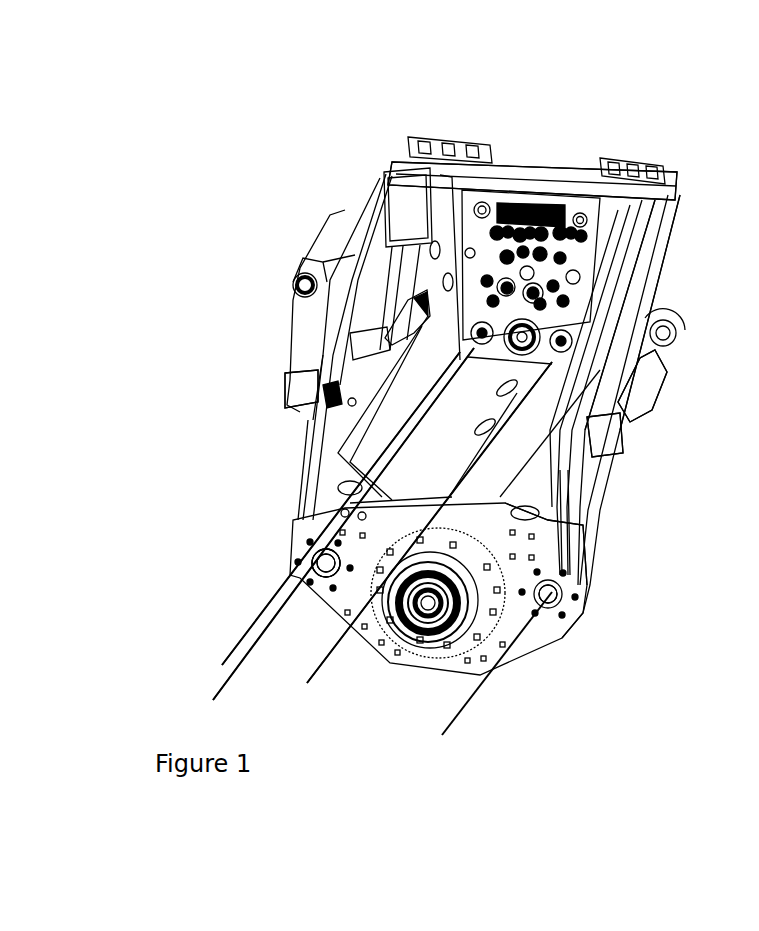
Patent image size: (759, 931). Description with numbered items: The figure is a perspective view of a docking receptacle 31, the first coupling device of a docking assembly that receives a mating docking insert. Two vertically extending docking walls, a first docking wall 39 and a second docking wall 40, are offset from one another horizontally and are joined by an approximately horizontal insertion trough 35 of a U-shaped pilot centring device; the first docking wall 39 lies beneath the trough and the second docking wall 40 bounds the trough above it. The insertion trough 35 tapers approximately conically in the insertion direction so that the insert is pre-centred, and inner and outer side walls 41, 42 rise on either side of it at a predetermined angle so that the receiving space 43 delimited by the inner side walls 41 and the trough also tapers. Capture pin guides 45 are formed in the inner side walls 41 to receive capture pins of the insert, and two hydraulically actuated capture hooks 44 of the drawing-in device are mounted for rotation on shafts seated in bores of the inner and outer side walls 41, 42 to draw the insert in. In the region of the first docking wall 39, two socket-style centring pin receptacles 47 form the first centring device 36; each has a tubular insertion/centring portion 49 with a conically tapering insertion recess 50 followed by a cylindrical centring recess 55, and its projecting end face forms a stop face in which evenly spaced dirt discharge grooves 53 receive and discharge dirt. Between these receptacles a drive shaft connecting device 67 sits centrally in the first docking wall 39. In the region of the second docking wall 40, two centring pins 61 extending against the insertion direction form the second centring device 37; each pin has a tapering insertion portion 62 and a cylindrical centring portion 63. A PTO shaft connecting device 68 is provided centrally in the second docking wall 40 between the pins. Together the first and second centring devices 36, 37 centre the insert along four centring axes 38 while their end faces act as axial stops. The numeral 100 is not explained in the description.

The docking receptacle 31 is at (384, 108).
The second docking wall 40 is at (458, 190).
The electronics panel 100 is at (530, 198).
The centring pins 61 is at (480, 347).
The insertion portion 62 is at (522, 337).
The cylindrical centring portion 63 is at (561, 341).
The capture hooks 44 is at (388, 292).
The capture pin guides 45 is at (388, 318).
The outer side walls 42 is at (322, 347).
The PTO shaft connecting device 68 is at (632, 283).
The second centring device 37 is at (610, 360).
The inner side walls 41 is at (421, 384).
The insertion trough 35 is at (453, 490).
The receiving space 43 is at (432, 450).
The socket-style centring pin receptacles 47 is at (320, 550).
The tubular insertion/centring portion 49 is at (326, 563).
The insertion recess 50 is at (326, 563).
The cylindrical centring recess 55 is at (300, 560).
The centring axes 38 is at (242, 638).
The drive shaft connecting device 67 is at (417, 643).
The dirt discharge grooves 53 is at (558, 613).
The first centring device 36 is at (570, 587).
The first docking wall 39 is at (548, 533).